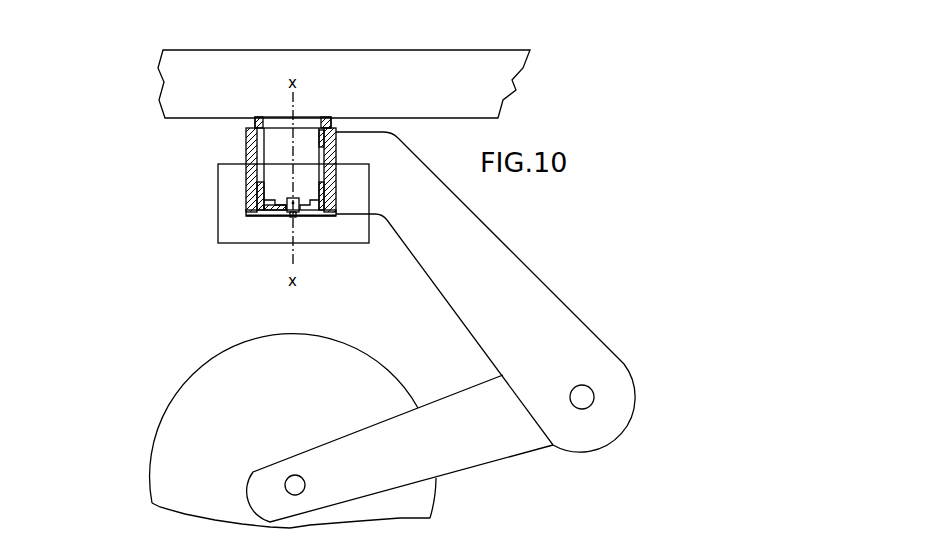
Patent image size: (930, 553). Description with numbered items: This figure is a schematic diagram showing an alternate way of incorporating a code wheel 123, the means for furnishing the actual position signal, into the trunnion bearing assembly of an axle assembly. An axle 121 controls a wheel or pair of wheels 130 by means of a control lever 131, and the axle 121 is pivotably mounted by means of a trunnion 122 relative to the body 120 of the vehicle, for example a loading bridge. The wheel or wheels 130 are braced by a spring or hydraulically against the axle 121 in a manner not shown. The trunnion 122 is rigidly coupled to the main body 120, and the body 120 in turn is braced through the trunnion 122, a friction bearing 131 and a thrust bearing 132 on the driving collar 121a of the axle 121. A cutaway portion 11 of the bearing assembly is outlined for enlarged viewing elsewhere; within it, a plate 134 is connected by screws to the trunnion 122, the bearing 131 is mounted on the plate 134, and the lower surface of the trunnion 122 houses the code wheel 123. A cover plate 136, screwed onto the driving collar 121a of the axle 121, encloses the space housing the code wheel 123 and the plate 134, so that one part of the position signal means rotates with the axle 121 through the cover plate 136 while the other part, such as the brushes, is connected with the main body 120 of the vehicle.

The body 120 is at (248, 72).
The thrust bearing 132 is at (253, 126).
The trunnion 122 is at (309, 146).
The driving collar 121a is at (248, 160).
The cutaway portion 11 is at (218, 190).
The control lever 131 is at (259, 200).
The plate 134 is at (270, 207).
The code wheel 123 is at (287, 210).
The cover plate 136 is at (318, 216).
The axle 121 is at (535, 268).
The wheel 130 is at (192, 402).